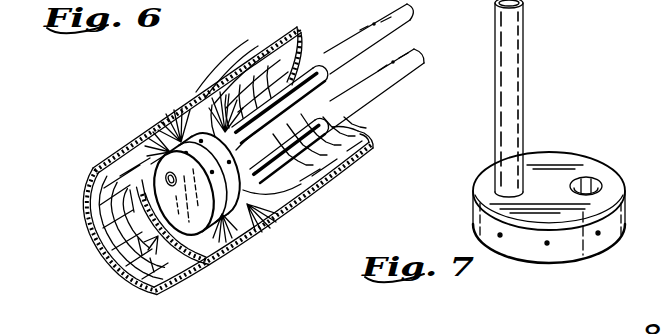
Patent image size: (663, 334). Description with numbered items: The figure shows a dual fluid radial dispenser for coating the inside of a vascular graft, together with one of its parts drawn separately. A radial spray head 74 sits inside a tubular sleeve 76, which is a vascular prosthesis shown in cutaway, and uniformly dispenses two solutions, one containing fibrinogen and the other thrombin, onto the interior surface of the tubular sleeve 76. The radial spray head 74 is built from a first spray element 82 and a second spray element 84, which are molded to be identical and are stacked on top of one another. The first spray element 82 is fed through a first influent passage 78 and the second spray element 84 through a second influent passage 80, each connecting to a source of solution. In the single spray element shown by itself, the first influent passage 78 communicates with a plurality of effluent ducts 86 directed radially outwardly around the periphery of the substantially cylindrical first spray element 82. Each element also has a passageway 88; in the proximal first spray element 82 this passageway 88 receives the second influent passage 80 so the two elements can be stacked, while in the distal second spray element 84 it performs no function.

In FIG. 6, the radial spray head 74 is at (226, 131).
In FIG. 6, the tubular sleeve 76 is at (115, 156).
In FIG. 6, the first influent passage 78 is at (321, 67).
In FIG. 7, the first influent passage 78 is at (516, 70).
In FIG. 6, the second influent passage 80 is at (326, 110).
In FIG. 6, the first spray element 82 is at (293, 204).
In FIG. 7, the first spray element 82 is at (577, 252).
In FIG. 6, the second spray element 84 is at (195, 226).
In FIG. 7, the effluent ducts 86 is at (546, 245).
In FIG. 7, the passageway 88 is at (593, 180).